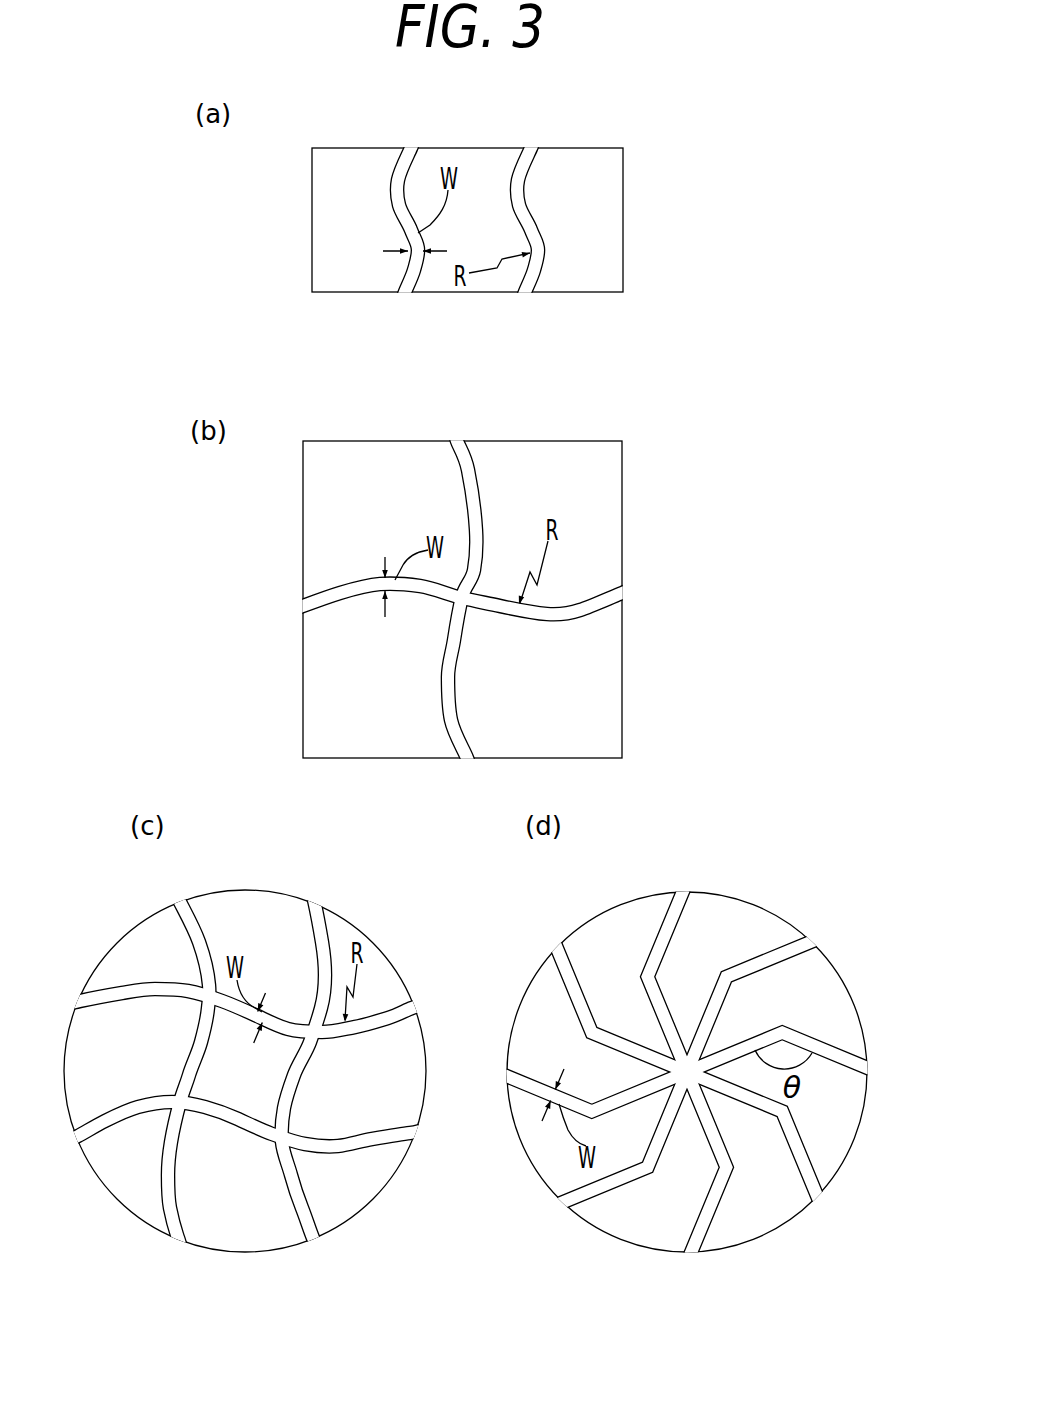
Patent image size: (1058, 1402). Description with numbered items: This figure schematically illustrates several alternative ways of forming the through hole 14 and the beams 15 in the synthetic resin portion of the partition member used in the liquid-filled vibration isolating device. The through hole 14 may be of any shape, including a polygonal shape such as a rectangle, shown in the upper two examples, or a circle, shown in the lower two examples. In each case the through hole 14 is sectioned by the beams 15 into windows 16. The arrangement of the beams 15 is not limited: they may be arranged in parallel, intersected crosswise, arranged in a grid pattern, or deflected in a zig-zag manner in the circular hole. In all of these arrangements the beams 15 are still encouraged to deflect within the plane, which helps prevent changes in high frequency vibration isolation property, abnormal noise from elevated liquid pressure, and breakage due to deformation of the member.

The through hole 14 is at (625, 188).
The beams 15 is at (403, 164).
The windows 16 is at (337, 180).